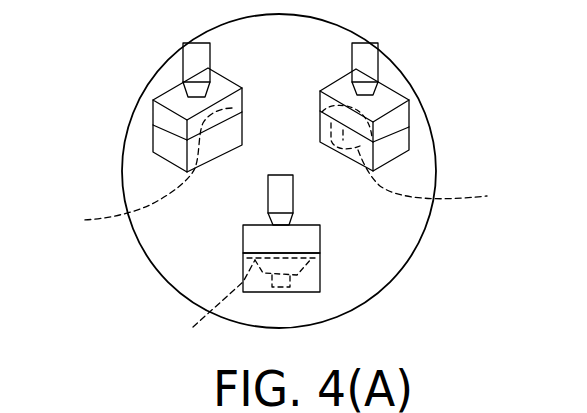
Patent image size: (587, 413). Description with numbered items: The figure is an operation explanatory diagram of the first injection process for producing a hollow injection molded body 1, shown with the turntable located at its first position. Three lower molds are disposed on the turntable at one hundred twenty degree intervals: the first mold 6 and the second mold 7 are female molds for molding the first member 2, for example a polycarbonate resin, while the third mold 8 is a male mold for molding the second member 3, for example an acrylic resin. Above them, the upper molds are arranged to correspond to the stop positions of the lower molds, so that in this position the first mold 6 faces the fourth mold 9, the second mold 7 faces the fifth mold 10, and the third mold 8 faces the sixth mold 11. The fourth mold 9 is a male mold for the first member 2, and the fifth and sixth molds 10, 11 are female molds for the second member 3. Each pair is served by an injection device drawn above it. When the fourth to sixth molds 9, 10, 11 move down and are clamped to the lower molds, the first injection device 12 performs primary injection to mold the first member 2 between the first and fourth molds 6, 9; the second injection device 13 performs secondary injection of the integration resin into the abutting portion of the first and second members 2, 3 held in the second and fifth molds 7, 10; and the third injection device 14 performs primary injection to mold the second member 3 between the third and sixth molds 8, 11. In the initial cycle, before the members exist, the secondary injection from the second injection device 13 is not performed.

The hollow injection molded body 1 is at (413, 155).
The first member 2 is at (246, 304).
The second member 3 is at (150, 172).
The first mold 6 is at (308, 283).
The second mold 7 is at (392, 147).
The third mold 8 is at (165, 145).
The fourth mold 9 is at (308, 237).
The fifth mold 10 is at (390, 98).
The sixth mold 11 is at (177, 100).
The first injection device 12 is at (277, 195).
The second injection device 13 is at (367, 62).
The third injection device 14 is at (195, 65).